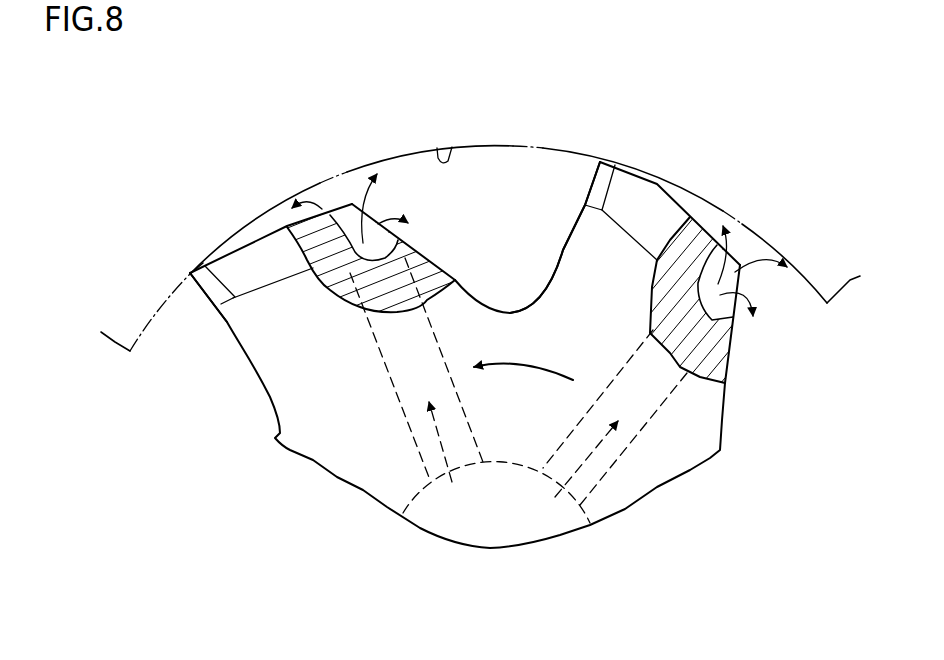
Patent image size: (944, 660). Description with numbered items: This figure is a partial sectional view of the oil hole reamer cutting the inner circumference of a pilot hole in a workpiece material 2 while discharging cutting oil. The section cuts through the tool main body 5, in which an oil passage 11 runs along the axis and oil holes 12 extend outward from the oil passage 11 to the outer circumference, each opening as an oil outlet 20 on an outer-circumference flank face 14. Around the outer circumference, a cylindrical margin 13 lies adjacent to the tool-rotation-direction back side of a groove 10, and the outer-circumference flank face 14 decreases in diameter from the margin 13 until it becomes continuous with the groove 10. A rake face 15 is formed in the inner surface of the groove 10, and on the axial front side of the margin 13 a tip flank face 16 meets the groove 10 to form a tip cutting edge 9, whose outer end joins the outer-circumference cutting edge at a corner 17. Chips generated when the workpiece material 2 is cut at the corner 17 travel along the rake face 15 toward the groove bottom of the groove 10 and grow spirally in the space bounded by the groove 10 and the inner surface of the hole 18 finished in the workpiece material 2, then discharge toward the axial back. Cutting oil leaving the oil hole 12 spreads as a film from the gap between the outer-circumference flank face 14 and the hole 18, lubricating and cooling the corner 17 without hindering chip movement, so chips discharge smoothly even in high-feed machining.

The workpiece material 2 is at (802, 274).
The tool main body 5 is at (732, 411).
The tip cutting edge 9 is at (194, 285).
The groove 10 is at (479, 286).
The oil passage 11 is at (445, 514).
The oil hole 12 is at (388, 363).
The margin 13 is at (192, 278).
The outer-circumference flank face 14 is at (252, 226).
The rake face 15 is at (567, 253).
The tip flank face 16 is at (218, 294).
The corner 17 is at (600, 162).
The hole 18 is at (440, 148).
The oil outlet 20 is at (352, 204).